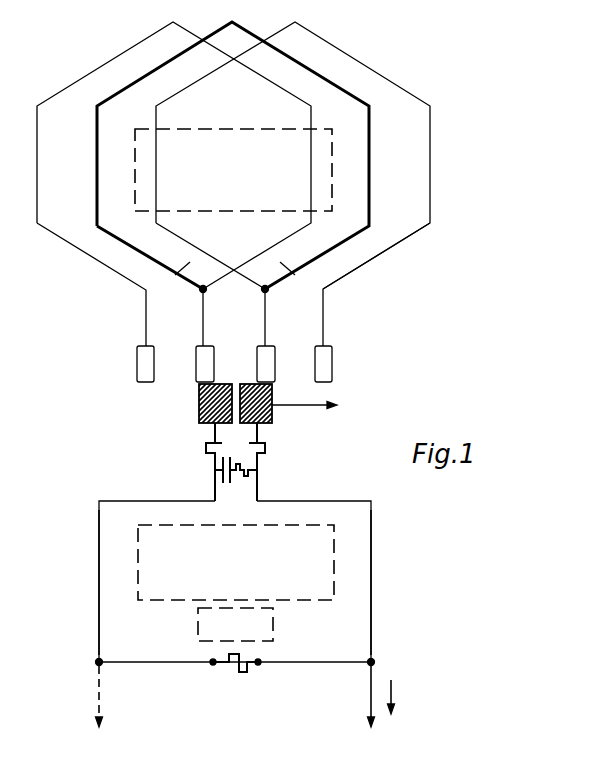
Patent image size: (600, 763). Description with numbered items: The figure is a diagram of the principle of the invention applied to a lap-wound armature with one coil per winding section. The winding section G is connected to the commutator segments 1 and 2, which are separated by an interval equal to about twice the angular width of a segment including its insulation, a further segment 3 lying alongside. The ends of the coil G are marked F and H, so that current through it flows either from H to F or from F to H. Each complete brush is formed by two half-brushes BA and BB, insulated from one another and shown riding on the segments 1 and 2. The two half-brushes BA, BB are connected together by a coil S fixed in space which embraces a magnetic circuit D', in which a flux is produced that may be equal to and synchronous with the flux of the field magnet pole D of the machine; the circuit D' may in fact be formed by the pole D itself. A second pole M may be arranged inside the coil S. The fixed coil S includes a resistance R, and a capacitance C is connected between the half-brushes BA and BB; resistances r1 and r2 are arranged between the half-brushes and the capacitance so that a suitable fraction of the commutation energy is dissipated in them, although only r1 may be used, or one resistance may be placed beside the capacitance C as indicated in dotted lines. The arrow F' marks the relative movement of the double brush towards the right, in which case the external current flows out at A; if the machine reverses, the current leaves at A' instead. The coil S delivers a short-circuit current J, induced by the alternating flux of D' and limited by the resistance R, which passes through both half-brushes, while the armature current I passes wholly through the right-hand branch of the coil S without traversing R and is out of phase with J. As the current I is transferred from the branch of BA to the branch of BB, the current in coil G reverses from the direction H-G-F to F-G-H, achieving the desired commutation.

The winding section G is at (233, 144).
The field magnet pole D is at (233, 170).
The end of coil G F is at (193, 299).
The end of coil G H is at (274, 299).
The commutator segment 1 is at (205, 364).
The commutator segment 2 is at (266, 364).
The commutator segment 3 is at (323, 364).
The half-brush BA is at (203, 406).
The half-brush BB is at (268, 413).
The arrow of relative movement F' is at (316, 406).
The resistance r1 is at (203, 462).
The resistance r2 is at (266, 462).
The capacitance C is at (244, 474).
The short-circuit current J is at (86, 582).
The fixed coil S is at (372, 581).
The magnetic circuit D' is at (236, 562).
The second pole M is at (235, 624).
The current outlet A' is at (85, 690).
The current outlet A is at (382, 690).
The resistance R is at (235, 681).
The armature current I is at (396, 697).